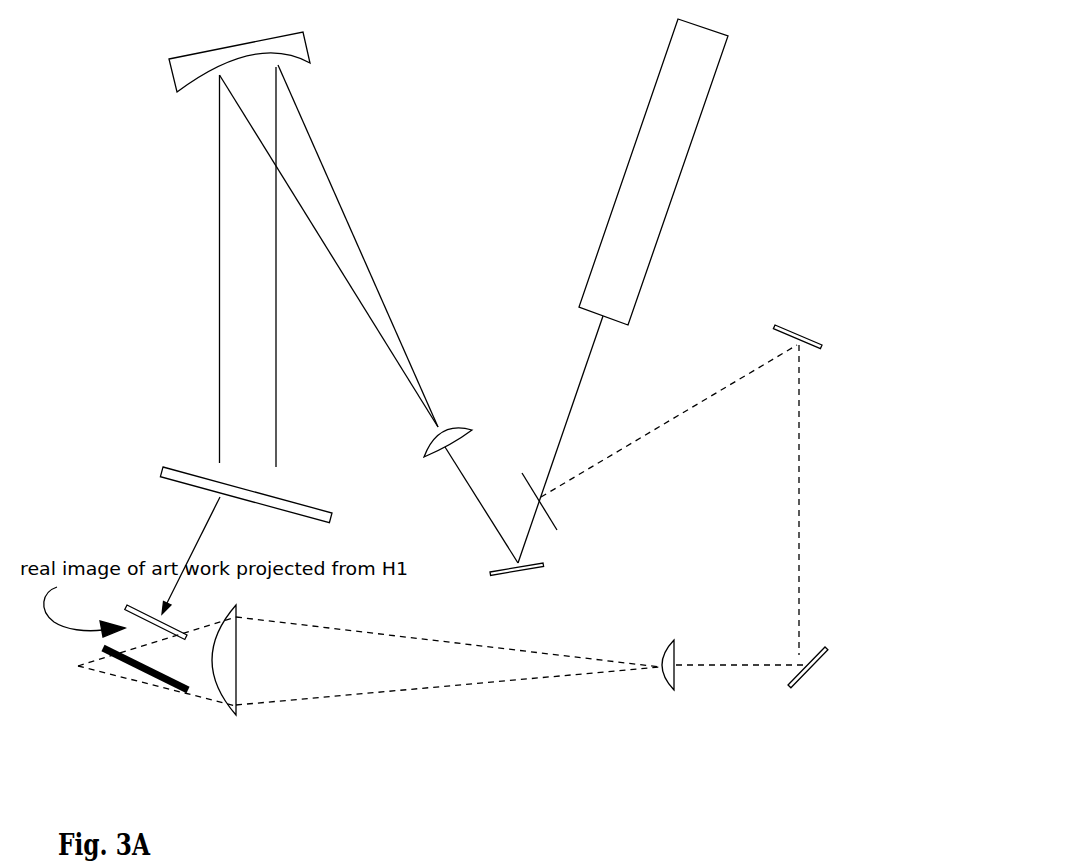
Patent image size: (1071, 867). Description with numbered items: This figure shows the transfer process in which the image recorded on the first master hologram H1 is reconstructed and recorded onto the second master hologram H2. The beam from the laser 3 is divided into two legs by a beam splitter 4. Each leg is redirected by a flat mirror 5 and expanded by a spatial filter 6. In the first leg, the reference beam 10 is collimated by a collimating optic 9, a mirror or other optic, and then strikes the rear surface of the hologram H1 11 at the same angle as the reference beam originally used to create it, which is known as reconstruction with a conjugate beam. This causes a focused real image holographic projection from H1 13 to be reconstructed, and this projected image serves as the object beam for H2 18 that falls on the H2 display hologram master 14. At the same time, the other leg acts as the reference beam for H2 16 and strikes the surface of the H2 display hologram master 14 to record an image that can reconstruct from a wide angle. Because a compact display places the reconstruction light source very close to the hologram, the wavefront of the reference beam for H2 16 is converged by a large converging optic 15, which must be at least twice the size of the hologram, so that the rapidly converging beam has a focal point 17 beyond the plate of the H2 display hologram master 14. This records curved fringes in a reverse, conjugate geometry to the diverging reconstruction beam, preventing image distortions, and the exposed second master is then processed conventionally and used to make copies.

The laser 3 is at (680, 172).
The beam splitter 4 is at (600, 509).
The flat mirror 5 is at (695, 514).
The spatial filter 6 is at (572, 560).
The collimating optic 9 is at (231, 61).
The reference beam for H1 10 is at (204, 267).
The hologram H1 11 is at (261, 488).
The real image holographic projection from H1 13 is at (147, 615).
The H2 display hologram master 14 is at (146, 688).
The large converging optic 15 is at (320, 674).
The reference beam for H2 16 is at (448, 667).
The focal point of reference beam for H2 17 is at (150, 661).
The object beam for H2 18 is at (127, 555).